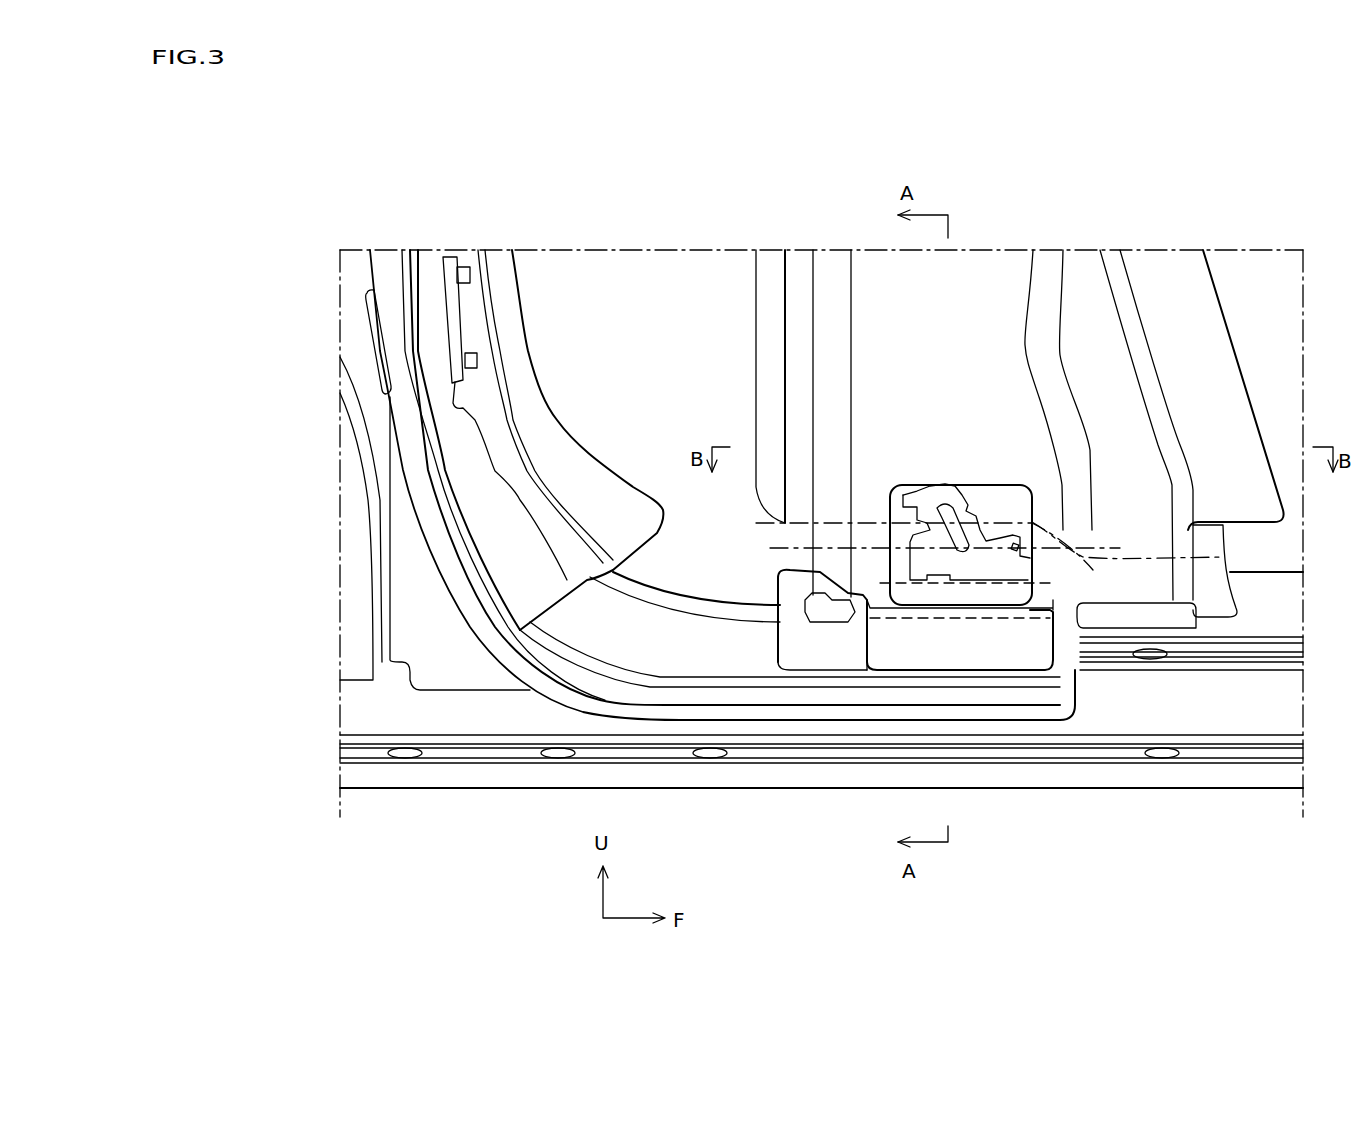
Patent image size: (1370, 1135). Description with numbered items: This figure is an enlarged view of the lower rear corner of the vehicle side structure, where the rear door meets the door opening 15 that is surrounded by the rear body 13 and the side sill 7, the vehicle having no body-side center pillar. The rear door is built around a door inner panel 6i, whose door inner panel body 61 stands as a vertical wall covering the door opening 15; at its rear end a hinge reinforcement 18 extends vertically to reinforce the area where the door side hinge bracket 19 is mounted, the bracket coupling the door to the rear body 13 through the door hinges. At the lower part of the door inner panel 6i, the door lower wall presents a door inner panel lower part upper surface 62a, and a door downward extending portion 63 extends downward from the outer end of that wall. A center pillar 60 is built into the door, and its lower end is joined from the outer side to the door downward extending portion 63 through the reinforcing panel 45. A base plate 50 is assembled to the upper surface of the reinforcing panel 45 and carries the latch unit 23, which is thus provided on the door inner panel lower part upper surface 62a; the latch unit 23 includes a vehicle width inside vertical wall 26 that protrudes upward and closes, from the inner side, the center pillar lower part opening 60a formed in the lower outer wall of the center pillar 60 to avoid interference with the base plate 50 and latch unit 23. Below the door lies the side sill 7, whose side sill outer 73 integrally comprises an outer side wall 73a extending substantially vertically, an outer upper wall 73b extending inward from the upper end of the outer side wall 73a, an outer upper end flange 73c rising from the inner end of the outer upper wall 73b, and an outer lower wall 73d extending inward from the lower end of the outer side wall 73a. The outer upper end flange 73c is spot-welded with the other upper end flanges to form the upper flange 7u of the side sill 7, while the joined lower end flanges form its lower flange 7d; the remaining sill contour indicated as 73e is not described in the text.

The rear body 13 is at (405, 590).
The door side hinge bracket 19 is at (462, 300).
The door inner panel body 61 is at (638, 268).
The hinge reinforcement 18 is at (645, 545).
The door opening 15 is at (1258, 287).
The center pillar 60 is at (1242, 327).
The center pillar lower part opening 60a is at (1018, 485).
The latch unit 23 is at (912, 460).
The vehicle width inside vertical wall 26 is at (980, 520).
The door inner panel lower part upper surface 62a is at (752, 600).
The door downward extending portion 63 is at (712, 612).
The reinforcing panel 45 is at (776, 647).
The base plate 50 is at (842, 636).
The door inner panel 6i is at (640, 720).
The side sill 7 is at (1138, 802).
The upper flange 7u is at (1285, 567).
The lower flange 7d is at (1230, 790).
The side sill outer 73 is at (1028, 790).
The outer side wall 73a is at (1290, 700).
The outer upper wall 73b is at (1295, 657).
The outer upper end flange 73c is at (1290, 612).
The outer lower wall 73d is at (1298, 752).
The side sill outer lower wall 73e is at (1298, 778).